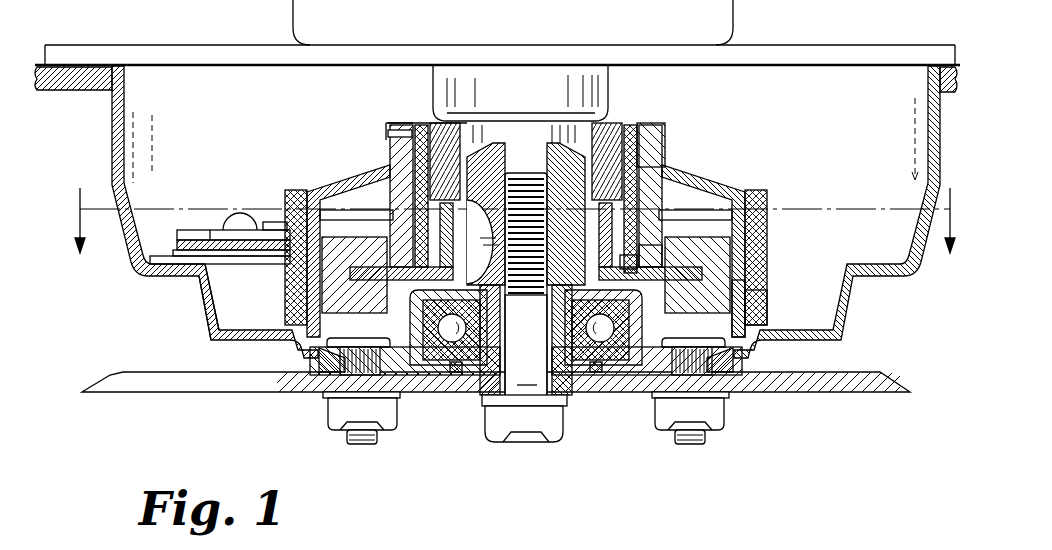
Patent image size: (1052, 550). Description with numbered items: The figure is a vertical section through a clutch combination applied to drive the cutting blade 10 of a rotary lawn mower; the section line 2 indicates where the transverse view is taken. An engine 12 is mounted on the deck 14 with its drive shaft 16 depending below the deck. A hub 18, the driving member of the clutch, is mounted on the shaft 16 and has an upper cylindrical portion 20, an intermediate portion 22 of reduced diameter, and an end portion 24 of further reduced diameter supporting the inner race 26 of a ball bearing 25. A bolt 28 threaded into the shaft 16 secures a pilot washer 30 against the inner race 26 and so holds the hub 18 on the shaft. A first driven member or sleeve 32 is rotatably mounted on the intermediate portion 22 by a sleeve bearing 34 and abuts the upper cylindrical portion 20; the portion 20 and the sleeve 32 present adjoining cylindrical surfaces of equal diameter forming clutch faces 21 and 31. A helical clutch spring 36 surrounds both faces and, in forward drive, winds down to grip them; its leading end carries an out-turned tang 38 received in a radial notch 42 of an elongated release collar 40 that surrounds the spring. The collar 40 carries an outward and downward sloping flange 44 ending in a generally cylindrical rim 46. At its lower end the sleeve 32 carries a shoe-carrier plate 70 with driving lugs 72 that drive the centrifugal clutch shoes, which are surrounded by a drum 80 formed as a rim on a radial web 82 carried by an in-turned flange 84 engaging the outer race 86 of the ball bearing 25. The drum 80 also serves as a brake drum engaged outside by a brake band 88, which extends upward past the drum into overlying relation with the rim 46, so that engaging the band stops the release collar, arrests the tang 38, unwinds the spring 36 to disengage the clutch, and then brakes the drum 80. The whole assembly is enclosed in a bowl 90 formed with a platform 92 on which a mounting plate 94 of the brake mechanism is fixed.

The section line 2- 2 is at (516, 202).
The cutting blade 10 is at (201, 386).
The engine 12 is at (705, 22).
The deck 14 is at (74, 88).
The drive shaft 16 is at (523, 130).
The hub 18 is at (447, 127).
The upper cylindrical portion 20 is at (425, 163).
The clutch face 21 is at (625, 148).
The intermediate portion 22 is at (453, 233).
The end portion 24 is at (487, 378).
The ball bearing 25 is at (446, 340).
The inner race 26 is at (598, 350).
The bolt 28 is at (527, 443).
The pilot washer 30 is at (495, 390).
The clutch face 31 is at (622, 262).
The sleeve 32 is at (640, 255).
The sleeve bearing 34 is at (590, 212).
The helical clutch spring 36 is at (640, 165).
The out-turned tang 38 is at (393, 133).
The release collar 40 is at (392, 164).
The radial notch 42 is at (395, 122).
The flange 44 is at (318, 186).
The rim 46 is at (287, 208).
The shoe-carrier plate 70 is at (647, 283).
The driving lugs 72 is at (728, 263).
The drum 80 is at (735, 283).
The radial web 82 is at (722, 360).
The in-turned flange 84 is at (636, 340).
The outer race 86 is at (613, 357).
The brake band 88 is at (752, 310).
The bowl 90 is at (123, 122).
The platform 92 is at (160, 277).
The mounting plate 94 is at (160, 257).